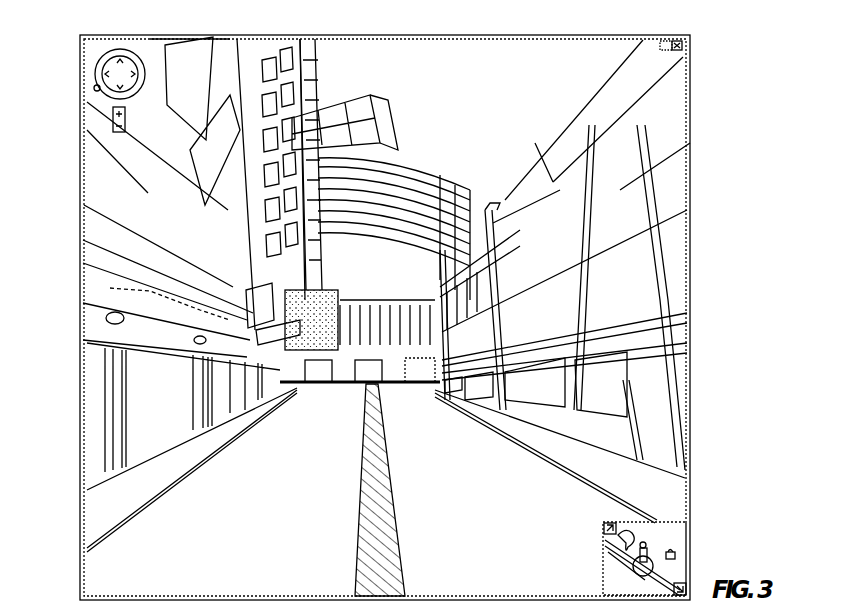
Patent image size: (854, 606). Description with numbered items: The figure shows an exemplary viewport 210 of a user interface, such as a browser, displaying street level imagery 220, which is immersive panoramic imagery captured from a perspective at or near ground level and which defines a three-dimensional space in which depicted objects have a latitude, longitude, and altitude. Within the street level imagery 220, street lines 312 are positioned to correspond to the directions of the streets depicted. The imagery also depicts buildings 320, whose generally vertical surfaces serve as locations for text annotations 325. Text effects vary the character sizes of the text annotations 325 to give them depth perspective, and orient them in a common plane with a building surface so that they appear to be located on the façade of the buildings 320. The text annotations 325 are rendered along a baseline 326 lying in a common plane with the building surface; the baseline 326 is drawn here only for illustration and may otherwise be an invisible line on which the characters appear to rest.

The viewport 210 is at (692, 297).
The street level imagery 220 is at (386, 317).
The street lines 312 is at (367, 390).
The buildings 320 is at (95, 182).
The text annotations 325 is at (150, 248).
The baseline 326 is at (110, 288).